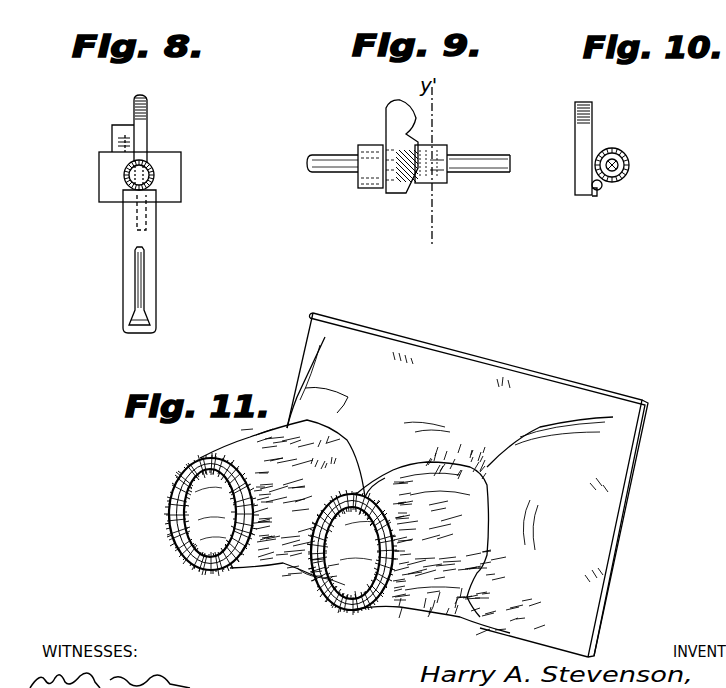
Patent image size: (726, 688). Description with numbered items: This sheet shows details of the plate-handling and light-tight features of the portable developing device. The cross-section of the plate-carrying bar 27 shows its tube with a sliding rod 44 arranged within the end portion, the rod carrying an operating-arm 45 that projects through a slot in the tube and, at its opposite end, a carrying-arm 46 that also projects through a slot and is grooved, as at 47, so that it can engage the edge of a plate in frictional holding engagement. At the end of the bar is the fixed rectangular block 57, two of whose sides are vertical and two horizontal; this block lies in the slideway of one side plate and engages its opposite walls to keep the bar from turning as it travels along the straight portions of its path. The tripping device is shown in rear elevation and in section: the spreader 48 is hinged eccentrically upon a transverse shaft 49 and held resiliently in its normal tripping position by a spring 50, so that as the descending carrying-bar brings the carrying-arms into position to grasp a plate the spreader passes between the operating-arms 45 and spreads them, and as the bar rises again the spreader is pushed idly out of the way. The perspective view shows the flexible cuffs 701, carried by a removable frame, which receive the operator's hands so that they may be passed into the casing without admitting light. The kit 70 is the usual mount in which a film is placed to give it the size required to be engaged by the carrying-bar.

In FIG. 8, the rectangular block 57 is at (99, 173).
In FIG. 8, the operating-arm 45 is at (140, 131).
In FIG. 8, the plate-carrying bar 27 is at (154, 168).
In FIG. 8, the sliding rod 44 is at (150, 189).
In FIG. 8, the carrying-arm 46 is at (123, 250).
In FIG. 8, the groove 47 is at (138, 288).
In FIG. 9, the spreader 48 is at (390, 121).
In FIG. 10, the spreader 48 is at (565, 149).
In FIG. 9, the transverse shaft 49 is at (313, 172).
In FIG. 10, the transverse shaft 49 is at (623, 150).
In FIG. 9, the spring 50 is at (440, 182).
In FIG. 10, the spring 50 is at (627, 178).
In FIG. 11, the kit 70 is at (623, 503).
In FIG. 11, the flexible cuffs 701 is at (278, 528).